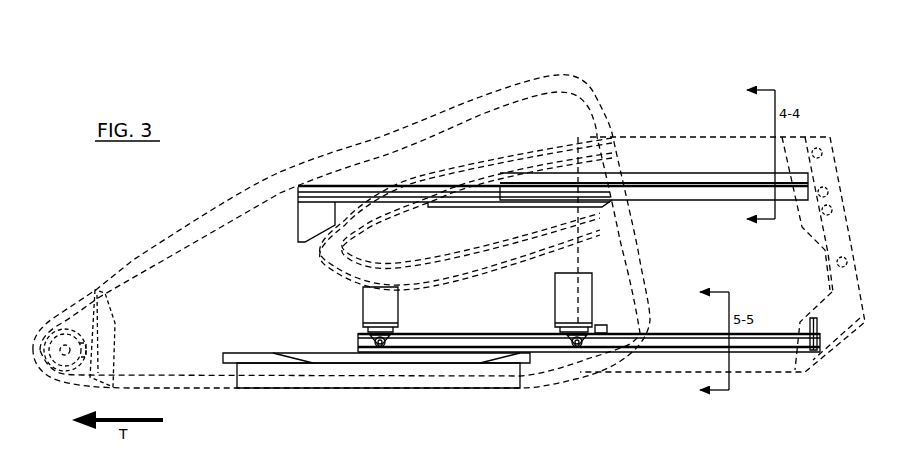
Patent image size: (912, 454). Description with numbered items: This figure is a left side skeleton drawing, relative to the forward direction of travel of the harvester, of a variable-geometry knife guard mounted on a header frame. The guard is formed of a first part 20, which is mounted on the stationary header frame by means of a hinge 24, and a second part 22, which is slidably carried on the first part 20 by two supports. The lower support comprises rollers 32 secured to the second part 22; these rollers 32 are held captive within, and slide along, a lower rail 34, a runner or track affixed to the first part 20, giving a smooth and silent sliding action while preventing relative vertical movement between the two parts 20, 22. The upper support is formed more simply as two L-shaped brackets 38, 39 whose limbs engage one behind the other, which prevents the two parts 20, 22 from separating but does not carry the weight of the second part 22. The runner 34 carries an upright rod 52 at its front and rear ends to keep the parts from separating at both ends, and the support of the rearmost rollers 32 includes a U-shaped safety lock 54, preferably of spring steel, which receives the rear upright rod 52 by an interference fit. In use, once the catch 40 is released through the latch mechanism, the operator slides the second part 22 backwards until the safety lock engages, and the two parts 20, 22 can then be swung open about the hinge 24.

The first part 20 is at (685, 93).
The second part 22 is at (242, 172).
The hinge 24 is at (843, 230).
The rollers 32 is at (378, 350).
The lower rail 34 is at (674, 345).
The L-shaped bracket 38 is at (359, 197).
The L-shaped bracket 39 is at (683, 193).
The catch 40 is at (48, 302).
The upright rod 52 is at (819, 324).
The U-shaped safety lock 54 is at (604, 322).